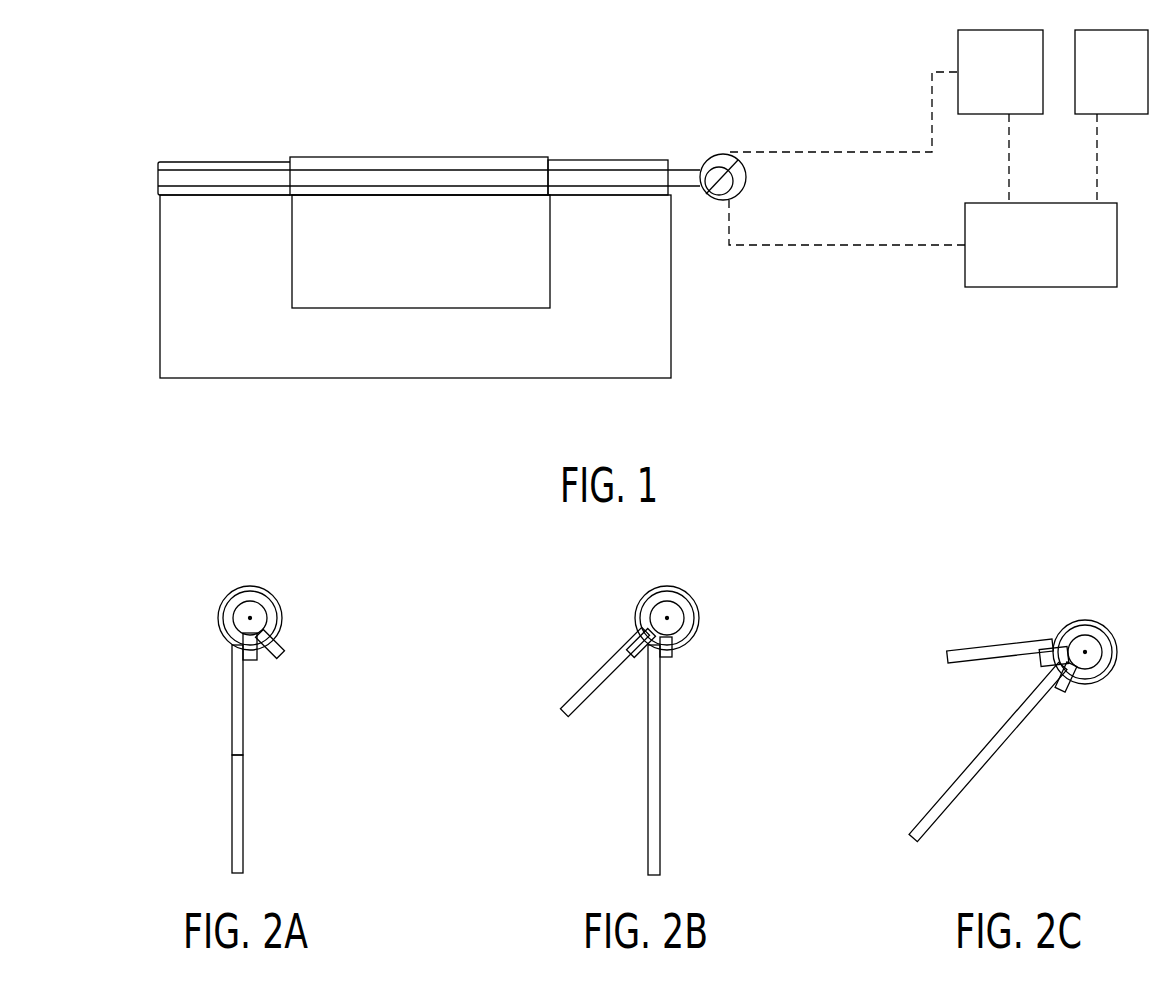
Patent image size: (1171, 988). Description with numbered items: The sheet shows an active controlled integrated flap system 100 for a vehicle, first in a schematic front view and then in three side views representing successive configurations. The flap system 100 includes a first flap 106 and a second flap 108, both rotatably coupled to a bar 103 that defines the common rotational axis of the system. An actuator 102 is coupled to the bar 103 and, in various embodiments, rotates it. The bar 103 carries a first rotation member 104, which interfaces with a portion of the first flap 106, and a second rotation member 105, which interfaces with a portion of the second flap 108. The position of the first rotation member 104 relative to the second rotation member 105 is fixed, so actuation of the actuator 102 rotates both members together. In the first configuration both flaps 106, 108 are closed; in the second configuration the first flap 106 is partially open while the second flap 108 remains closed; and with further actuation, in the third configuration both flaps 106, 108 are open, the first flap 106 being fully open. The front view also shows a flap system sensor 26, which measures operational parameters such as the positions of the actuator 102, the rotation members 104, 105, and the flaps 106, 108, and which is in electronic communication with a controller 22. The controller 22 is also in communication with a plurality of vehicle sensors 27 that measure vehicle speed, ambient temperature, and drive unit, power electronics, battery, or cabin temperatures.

In FIG. 1, the flap system 100 is at (122, 205).
In FIG. 2A, the flap system 100 is at (195, 562).
In FIG. 1, the actuator 102 is at (742, 181).
In FIG. 2A, the actuator 102 is at (251, 617).
In FIG. 2B, the actuator 102 is at (668, 617).
In FIG. 2C, the actuator 102 is at (1086, 651).
In FIG. 1, the bar 103 is at (640, 180).
In FIG. 2A, the first rotation member 104 is at (255, 655).
In FIG. 2B, the first rotation member 104 is at (637, 630).
In FIG. 2C, the first rotation member 104 is at (1045, 650).
In FIG. 2A, the second rotation member 105 is at (283, 648).
In FIG. 2B, the second rotation member 105 is at (672, 655).
In FIG. 2C, the second rotation member 105 is at (1072, 682).
In FIG. 1, the first flap 106 is at (468, 282).
In FIG. 2A, the first flap 106 is at (243, 725).
In FIG. 2B, the first flap 106 is at (593, 677).
In FIG. 2C, the first flap 106 is at (983, 650).
In FIG. 1, the second flap 108 is at (228, 358).
In FIG. 2A, the second flap 108 is at (243, 790).
In FIG. 2B, the second flap 108 is at (660, 790).
In FIG. 2C, the second flap 108 is at (993, 742).
In FIG. 1, the controller 22 is at (1050, 258).
In FIG. 1, the flap system sensor 26 is at (1010, 83).
In FIG. 1, the vehicle sensors 27 is at (1122, 83).